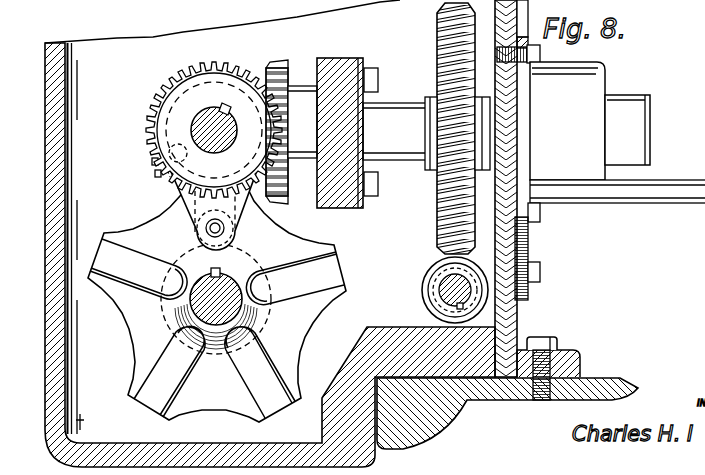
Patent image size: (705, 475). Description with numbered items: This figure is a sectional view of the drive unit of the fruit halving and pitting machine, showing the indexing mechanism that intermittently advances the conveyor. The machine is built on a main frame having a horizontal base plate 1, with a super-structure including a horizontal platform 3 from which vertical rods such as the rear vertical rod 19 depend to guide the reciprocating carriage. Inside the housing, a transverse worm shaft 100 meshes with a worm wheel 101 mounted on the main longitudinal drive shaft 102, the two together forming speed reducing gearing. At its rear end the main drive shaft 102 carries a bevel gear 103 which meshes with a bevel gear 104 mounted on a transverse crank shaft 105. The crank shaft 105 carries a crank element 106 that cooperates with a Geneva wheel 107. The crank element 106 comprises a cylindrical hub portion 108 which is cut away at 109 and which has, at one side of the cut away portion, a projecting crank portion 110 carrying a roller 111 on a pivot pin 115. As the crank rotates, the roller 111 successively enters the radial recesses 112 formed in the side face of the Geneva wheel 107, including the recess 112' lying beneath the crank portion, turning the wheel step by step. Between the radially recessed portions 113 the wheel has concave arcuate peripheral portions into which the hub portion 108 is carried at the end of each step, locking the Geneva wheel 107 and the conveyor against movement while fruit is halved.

The horizontal base plate 1 is at (362, 119).
The horizontal platform 3 is at (600, 386).
The rear vertical rod 19 is at (222, 21).
The worm shaft 100 is at (442, 293).
The worm wheel 101 is at (441, 244).
The main longitudinal drive shaft 102 is at (652, 143).
The bevel gear 103 is at (279, 68).
The bevel gear 104 is at (168, 79).
The transverse crank shaft 105 is at (191, 131).
The crank element 106 is at (152, 108).
The Geneva wheel 107 is at (114, 216).
The cylindrical hub portion 108 is at (191, 68).
The cut away portion 109 is at (152, 161).
The projecting crank portion 110 is at (205, 195).
The roller 111 is at (264, 232).
The radial recess 112 is at (232, 333).
The hidden radial slot 112' is at (215, 195).
The radially recessed portion 113 is at (334, 282).
The pivot pin 115 is at (212, 229).